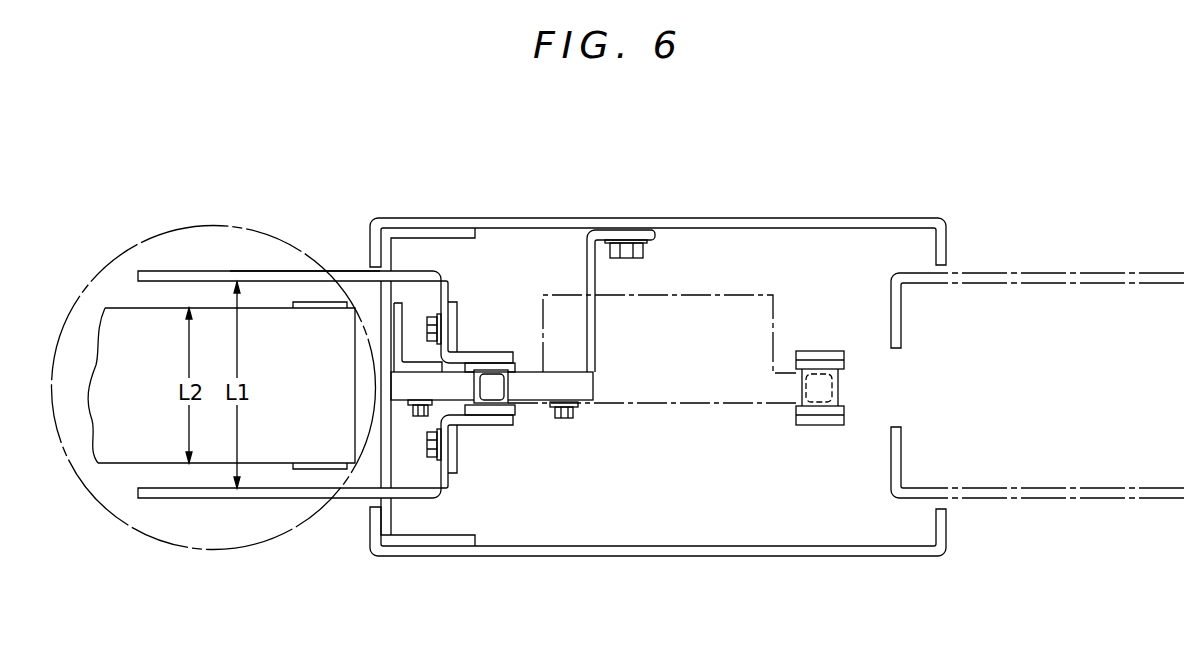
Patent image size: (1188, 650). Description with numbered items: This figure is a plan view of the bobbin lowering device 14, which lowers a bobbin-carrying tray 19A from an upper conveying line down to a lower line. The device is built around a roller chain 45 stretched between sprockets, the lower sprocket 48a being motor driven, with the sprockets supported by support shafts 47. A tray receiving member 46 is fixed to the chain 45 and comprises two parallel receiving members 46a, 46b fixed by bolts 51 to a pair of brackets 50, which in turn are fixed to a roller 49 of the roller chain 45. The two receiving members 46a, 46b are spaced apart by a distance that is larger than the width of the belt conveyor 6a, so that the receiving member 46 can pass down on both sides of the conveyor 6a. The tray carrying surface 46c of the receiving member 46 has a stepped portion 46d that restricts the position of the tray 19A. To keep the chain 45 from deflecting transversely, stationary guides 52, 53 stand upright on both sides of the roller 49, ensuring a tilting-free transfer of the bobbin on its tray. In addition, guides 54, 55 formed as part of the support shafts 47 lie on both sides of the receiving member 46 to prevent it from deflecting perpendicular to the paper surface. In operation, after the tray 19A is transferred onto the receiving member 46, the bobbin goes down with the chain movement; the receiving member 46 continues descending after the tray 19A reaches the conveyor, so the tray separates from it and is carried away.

The bobbin lowering device 14 is at (541, 191).
The support shafts 47 is at (728, 218).
The guide 54 is at (373, 256).
The guide 55 is at (373, 514).
The stationary guide 52 is at (583, 388).
The stationary guide 53 is at (426, 392).
The roller 49 is at (505, 388).
The brackets 50 is at (490, 353).
The bolts 51 is at (438, 328).
The roller chain 45 is at (816, 351).
The sprocket 48a is at (745, 404).
The tray receiving member 46 is at (1030, 268).
The receiving member 46a is at (195, 500).
The receiving member 46b is at (178, 270).
The tray carrying surface 46c is at (258, 262).
The stepped portion 46d is at (330, 262).
The belt conveyor 6a is at (118, 455).
The tray 19A is at (222, 551).